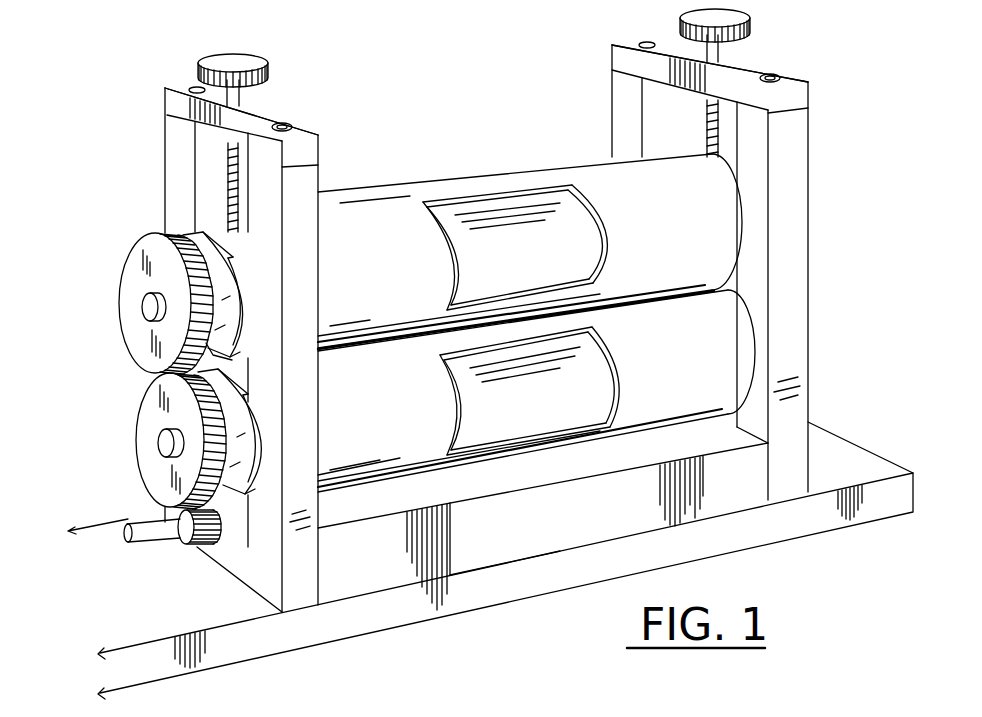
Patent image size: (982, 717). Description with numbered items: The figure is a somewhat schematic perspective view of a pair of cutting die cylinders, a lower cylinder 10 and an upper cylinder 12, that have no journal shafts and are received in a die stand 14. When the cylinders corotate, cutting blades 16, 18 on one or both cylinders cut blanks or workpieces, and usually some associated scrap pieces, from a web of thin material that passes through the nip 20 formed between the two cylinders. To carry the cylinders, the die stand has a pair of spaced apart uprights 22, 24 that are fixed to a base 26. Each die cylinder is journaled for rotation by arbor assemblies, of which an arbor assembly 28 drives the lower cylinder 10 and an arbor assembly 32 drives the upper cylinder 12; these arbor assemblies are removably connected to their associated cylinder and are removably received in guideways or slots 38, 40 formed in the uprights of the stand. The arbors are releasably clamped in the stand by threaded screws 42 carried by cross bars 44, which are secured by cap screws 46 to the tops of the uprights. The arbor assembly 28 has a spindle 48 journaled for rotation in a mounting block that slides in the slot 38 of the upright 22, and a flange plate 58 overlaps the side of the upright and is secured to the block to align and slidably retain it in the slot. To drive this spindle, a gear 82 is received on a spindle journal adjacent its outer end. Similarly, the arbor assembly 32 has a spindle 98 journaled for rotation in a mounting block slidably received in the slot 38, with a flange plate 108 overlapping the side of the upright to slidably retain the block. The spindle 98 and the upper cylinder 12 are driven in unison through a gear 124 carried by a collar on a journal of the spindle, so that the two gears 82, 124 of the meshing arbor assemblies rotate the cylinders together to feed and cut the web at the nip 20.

The lower cutting die cylinder 10 is at (723, 375).
The upper cutting die cylinder 12 is at (722, 227).
The die stand 14 is at (815, 538).
The cutting blade 16 is at (608, 358).
The cutting blade 18 is at (597, 209).
The nip 20 is at (680, 302).
The upright 22 is at (165, 178).
The upright 24 is at (812, 265).
The base 26 is at (497, 603).
The arbor assembly 28 is at (262, 434).
The arbor assembly 32 is at (258, 292).
The slot 38 is at (203, 204).
The slot 40 is at (655, 122).
The threaded screw 42 is at (230, 156).
The cross bar 44 is at (176, 98).
The cap screw 46 is at (288, 124).
The spindle 48 is at (158, 440).
The flange plate 58 is at (228, 495).
The gear 82 is at (137, 415).
The spindle 98 is at (143, 308).
The flange plate 108 is at (247, 352).
The gear 124 is at (122, 262).